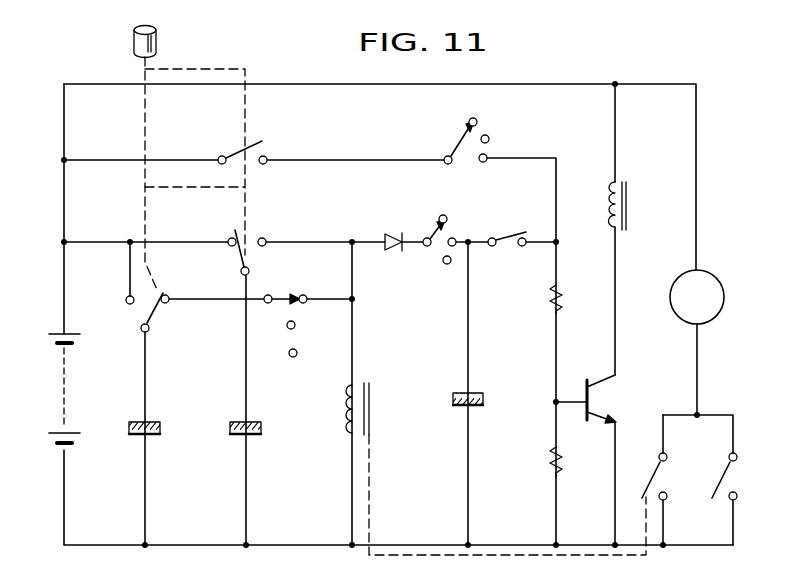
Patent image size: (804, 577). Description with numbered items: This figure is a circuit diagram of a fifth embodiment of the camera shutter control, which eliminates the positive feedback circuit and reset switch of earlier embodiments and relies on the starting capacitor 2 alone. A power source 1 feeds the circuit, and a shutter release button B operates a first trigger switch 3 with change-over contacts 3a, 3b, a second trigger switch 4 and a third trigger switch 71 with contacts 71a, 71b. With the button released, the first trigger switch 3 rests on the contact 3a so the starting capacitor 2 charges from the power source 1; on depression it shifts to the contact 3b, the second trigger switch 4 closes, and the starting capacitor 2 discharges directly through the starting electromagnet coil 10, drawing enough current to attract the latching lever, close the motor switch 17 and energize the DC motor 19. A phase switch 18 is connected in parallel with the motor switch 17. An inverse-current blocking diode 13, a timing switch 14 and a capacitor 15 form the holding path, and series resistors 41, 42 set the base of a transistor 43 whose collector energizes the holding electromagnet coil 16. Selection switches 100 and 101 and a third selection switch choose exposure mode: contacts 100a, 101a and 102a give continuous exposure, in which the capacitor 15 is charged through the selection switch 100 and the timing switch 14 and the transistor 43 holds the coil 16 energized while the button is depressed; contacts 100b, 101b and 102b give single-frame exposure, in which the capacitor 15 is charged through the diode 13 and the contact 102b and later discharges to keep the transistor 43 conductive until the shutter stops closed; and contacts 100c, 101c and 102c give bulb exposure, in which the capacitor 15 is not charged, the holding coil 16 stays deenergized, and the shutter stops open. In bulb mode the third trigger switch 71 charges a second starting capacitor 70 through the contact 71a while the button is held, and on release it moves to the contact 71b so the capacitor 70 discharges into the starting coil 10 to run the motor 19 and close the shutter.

The shutter release button B is at (152, 45).
The power source 1 is at (66, 365).
The starting capacitor 2 is at (262, 432).
The first trigger switch 3 is at (239, 258).
The contact 3a is at (230, 238).
The contact 3b is at (263, 237).
The second trigger switch 4 is at (238, 148).
The starting electromagnet coil 10 is at (372, 403).
The diode 13 is at (391, 251).
The timing switch 14 is at (508, 250).
The capacitor 15 is at (484, 405).
The holding electromagnet coil 16 is at (630, 197).
The motor switch 17 is at (662, 477).
The phase switch 18 is at (732, 477).
The DC motor 19 is at (704, 270).
The resistor 41 is at (562, 299).
The resistor 42 is at (551, 462).
The transistor 43 is at (604, 398).
The second starting capacitor 70 is at (160, 420).
The third trigger switch 71 is at (150, 326).
The contact 71a is at (126, 297).
The contact 71b is at (165, 295).
The selection switch 100 is at (464, 142).
The contact 100a is at (484, 162).
The contact 100b is at (489, 138).
The contact 100c is at (477, 119).
The selection switch 101 is at (280, 294).
The contact 101a is at (297, 357).
The contact 101b is at (289, 329).
The contact 101c is at (306, 303).
The contact 102a is at (449, 264).
The contact 102b is at (456, 238).
The contact 102c is at (441, 215).